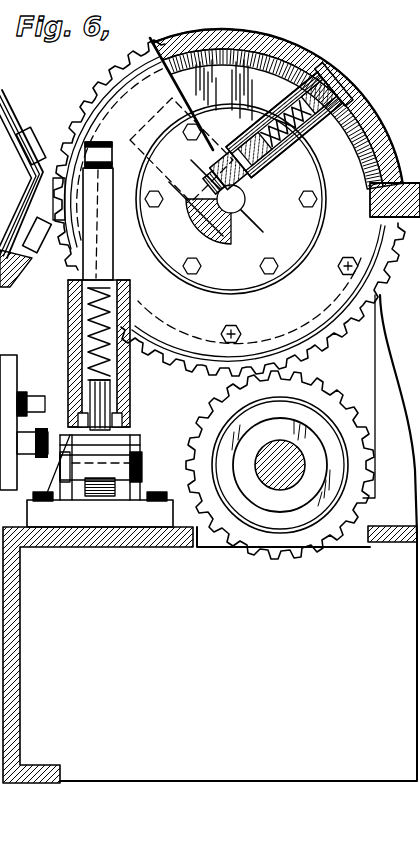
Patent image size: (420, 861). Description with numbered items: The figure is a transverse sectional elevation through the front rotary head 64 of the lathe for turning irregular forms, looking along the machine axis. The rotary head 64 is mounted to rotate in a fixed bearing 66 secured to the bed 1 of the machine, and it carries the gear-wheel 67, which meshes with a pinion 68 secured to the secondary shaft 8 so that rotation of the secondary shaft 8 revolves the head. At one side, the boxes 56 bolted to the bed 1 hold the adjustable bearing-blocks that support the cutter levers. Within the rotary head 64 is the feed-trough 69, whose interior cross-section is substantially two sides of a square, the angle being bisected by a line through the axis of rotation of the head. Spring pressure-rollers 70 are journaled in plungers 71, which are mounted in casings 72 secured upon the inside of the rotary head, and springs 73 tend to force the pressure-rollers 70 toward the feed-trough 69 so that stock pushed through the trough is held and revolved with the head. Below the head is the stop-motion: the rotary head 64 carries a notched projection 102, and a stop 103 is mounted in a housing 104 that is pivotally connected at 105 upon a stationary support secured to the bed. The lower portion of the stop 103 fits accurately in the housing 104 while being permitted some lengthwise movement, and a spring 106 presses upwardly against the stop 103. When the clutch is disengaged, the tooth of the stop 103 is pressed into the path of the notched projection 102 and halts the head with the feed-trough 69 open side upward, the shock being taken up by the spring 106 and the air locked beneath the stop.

The bed 1 is at (18, 578).
The secondary shaft 8 is at (290, 470).
The boxes 56 is at (5, 330).
The rotary head 64 is at (328, 56).
The fixed bearing 66 is at (292, 42).
The gear-wheel 67 is at (349, 258).
The pinion 68 is at (280, 484).
The feed-trough 69 is at (263, 243).
The spring pressure-rollers 70 is at (223, 184).
The plungers 71 is at (223, 174).
The casings 72 is at (248, 104).
The springs 73 is at (273, 132).
The notched projection 102 is at (160, 112).
The stop 103 is at (108, 240).
The housing 104 is at (78, 355).
The pivot 105 is at (142, 462).
The spring 106 is at (80, 327).